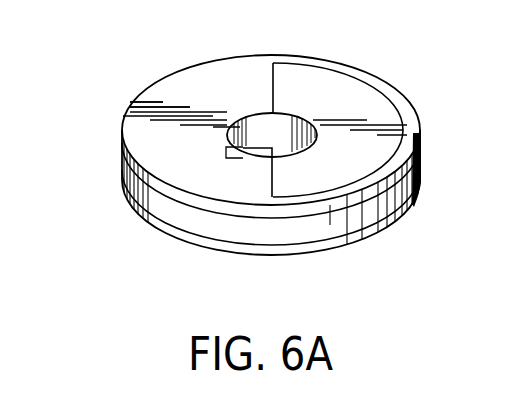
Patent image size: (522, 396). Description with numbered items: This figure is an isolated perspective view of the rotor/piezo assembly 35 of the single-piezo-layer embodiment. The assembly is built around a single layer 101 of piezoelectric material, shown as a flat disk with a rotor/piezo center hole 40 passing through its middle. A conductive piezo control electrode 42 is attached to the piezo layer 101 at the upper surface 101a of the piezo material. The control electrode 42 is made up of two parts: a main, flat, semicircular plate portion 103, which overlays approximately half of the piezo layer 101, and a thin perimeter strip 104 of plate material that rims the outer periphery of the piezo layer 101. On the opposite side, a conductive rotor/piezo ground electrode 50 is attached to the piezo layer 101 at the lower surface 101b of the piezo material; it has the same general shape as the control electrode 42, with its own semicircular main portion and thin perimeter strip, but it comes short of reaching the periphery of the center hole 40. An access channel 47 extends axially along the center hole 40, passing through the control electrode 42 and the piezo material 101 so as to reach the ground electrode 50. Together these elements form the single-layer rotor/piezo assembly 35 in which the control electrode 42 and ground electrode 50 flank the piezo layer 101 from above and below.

The rotor/piezo assembly 35 is at (475, 92).
The rotor/piezo center hole 40 is at (273, 113).
The piezo control electrode 42 is at (178, 88).
The access channel 47 is at (224, 151).
The rotor/piezo ground electrode 50 is at (377, 230).
The piezo layer 101 is at (418, 205).
The upper surface of the piezo material 101a is at (133, 163).
The lower surface of the piezo material 101b is at (166, 233).
The main semicircular plate portion 103 is at (131, 133).
The thin perimeter strip 104 is at (395, 95).